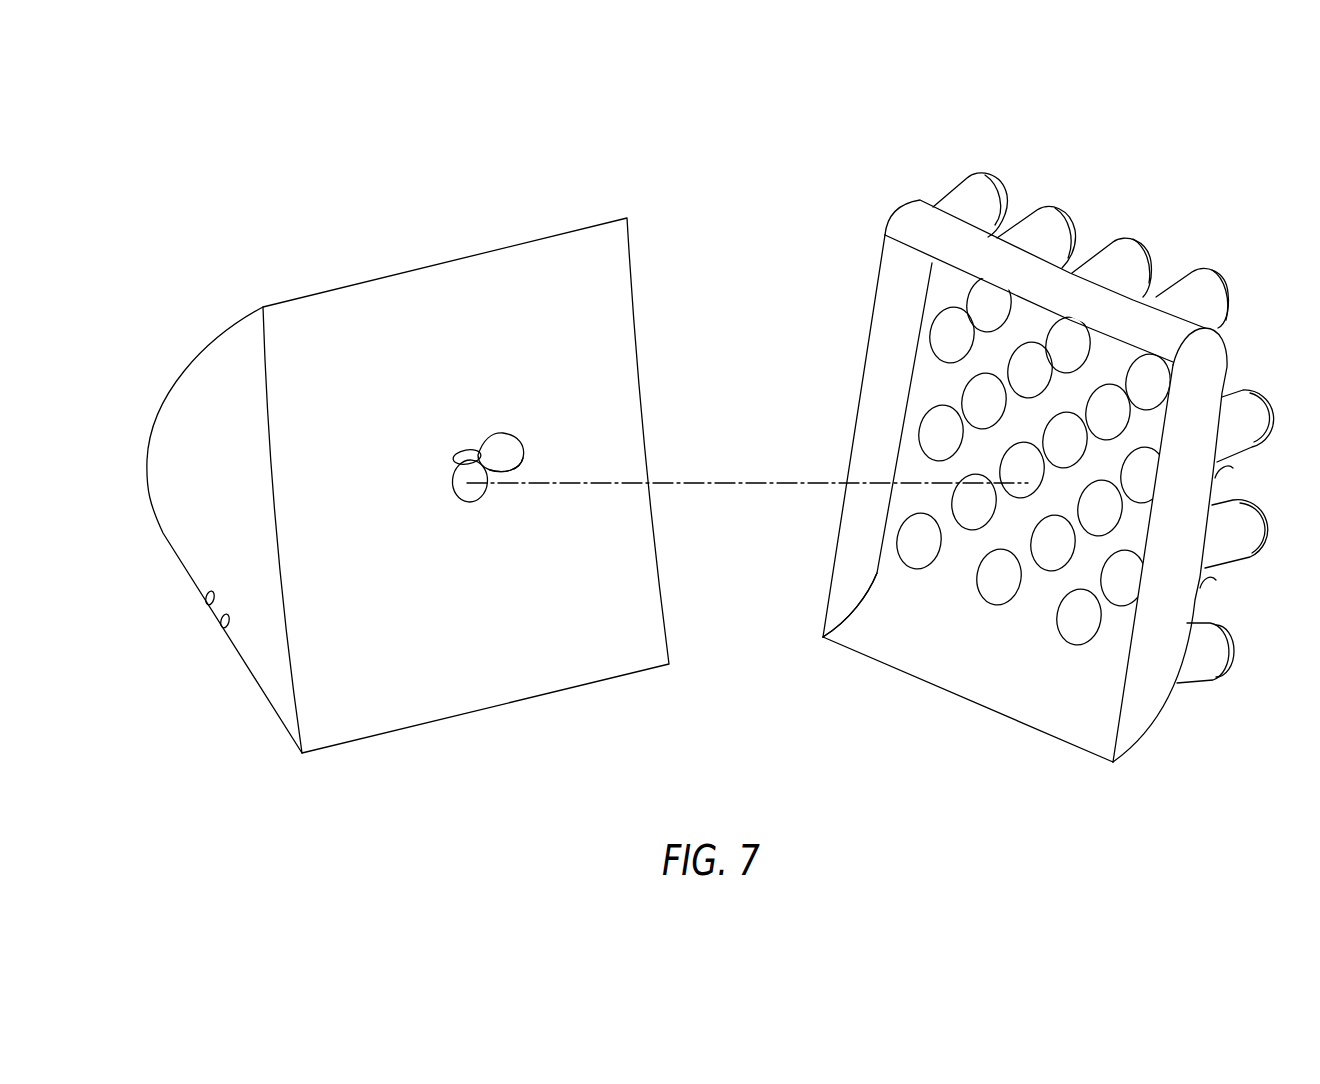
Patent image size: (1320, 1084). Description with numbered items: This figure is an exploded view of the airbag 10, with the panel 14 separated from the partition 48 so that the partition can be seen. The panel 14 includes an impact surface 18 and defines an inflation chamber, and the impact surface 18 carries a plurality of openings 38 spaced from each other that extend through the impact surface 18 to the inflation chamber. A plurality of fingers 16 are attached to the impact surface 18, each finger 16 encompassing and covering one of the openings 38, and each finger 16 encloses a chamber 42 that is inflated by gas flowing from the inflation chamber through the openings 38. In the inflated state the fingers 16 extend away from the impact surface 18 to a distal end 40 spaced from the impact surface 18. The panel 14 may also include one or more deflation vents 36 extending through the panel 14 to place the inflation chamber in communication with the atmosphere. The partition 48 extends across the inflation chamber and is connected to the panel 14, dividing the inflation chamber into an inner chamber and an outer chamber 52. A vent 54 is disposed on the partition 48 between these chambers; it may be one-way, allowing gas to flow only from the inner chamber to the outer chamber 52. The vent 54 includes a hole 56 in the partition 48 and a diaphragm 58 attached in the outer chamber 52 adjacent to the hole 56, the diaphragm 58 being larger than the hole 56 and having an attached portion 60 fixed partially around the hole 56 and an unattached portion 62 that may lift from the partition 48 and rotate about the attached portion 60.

The airbag 10 is at (134, 315).
The panel 14 is at (238, 327).
The fingers 16 is at (975, 193).
The impact surface 18 is at (1224, 383).
The deflation vents 36 is at (208, 606).
The openings 38 is at (898, 522).
The distal end 40 is at (1232, 335).
The chamber 42 is at (1057, 557).
The partition 48 is at (612, 268).
The outer chamber 52 is at (900, 635).
The vent 54 is at (475, 410).
The hole 56 is at (458, 508).
The diaphragm 58 is at (508, 432).
The attached portion 60 is at (457, 440).
The unattached portion 62 is at (528, 454).